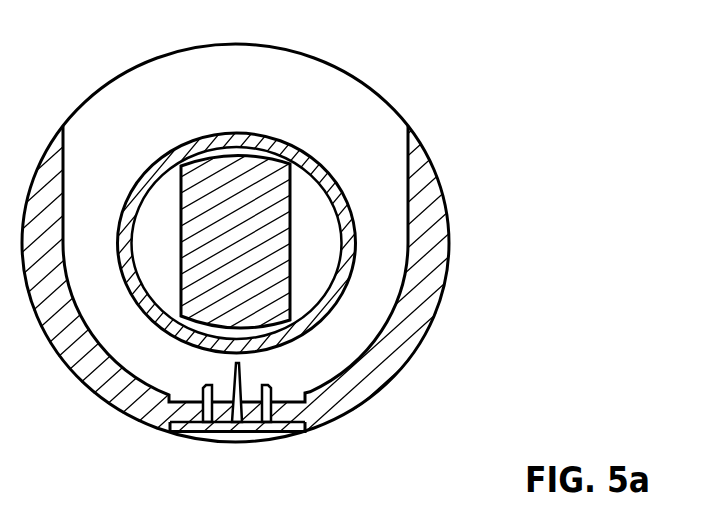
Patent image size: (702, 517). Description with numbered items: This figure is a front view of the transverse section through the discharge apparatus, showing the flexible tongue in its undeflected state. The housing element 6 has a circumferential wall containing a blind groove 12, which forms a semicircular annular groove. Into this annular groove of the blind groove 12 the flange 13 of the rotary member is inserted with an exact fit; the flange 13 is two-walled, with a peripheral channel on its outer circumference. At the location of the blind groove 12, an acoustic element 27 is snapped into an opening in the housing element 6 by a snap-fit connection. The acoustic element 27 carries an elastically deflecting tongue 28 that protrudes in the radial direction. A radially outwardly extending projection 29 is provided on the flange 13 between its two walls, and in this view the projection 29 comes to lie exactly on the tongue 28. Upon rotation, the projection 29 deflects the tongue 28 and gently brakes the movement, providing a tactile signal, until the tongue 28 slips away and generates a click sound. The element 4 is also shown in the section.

The central core element 4 is at (220, 208).
The housing element 6 is at (455, 317).
The blind groove 12 is at (335, 95).
The flange 13 is at (352, 222).
The acoustic element 27 is at (253, 430).
The tongue 28 is at (233, 402).
The projection 29 is at (247, 358).